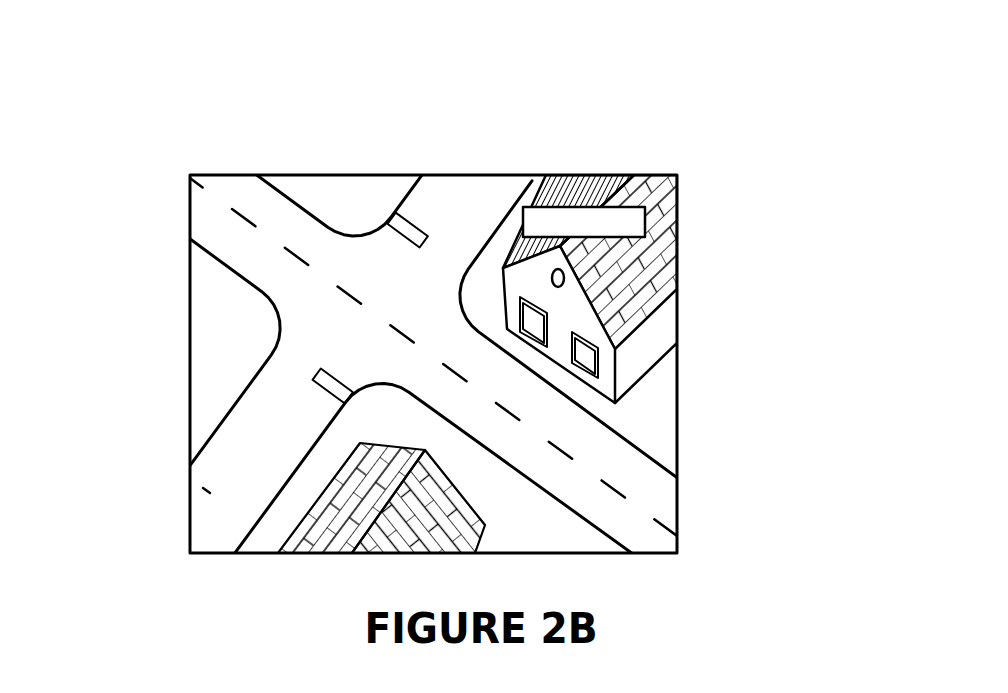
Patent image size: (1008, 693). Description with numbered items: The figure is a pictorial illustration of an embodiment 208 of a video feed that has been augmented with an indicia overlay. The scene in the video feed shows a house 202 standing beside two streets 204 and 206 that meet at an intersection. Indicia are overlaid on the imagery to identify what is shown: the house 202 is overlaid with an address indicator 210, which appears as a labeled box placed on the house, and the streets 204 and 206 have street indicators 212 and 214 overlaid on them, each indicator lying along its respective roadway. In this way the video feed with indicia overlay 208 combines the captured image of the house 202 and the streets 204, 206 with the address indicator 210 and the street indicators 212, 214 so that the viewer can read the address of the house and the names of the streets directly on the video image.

The house 202 is at (678, 238).
The street 204 is at (588, 503).
The street 206 is at (203, 488).
The video feed with indicia overlay 208 is at (662, 427).
The address indicator 210 is at (607, 176).
The street indicator 212 is at (263, 285).
The street indicator 214 is at (512, 176).